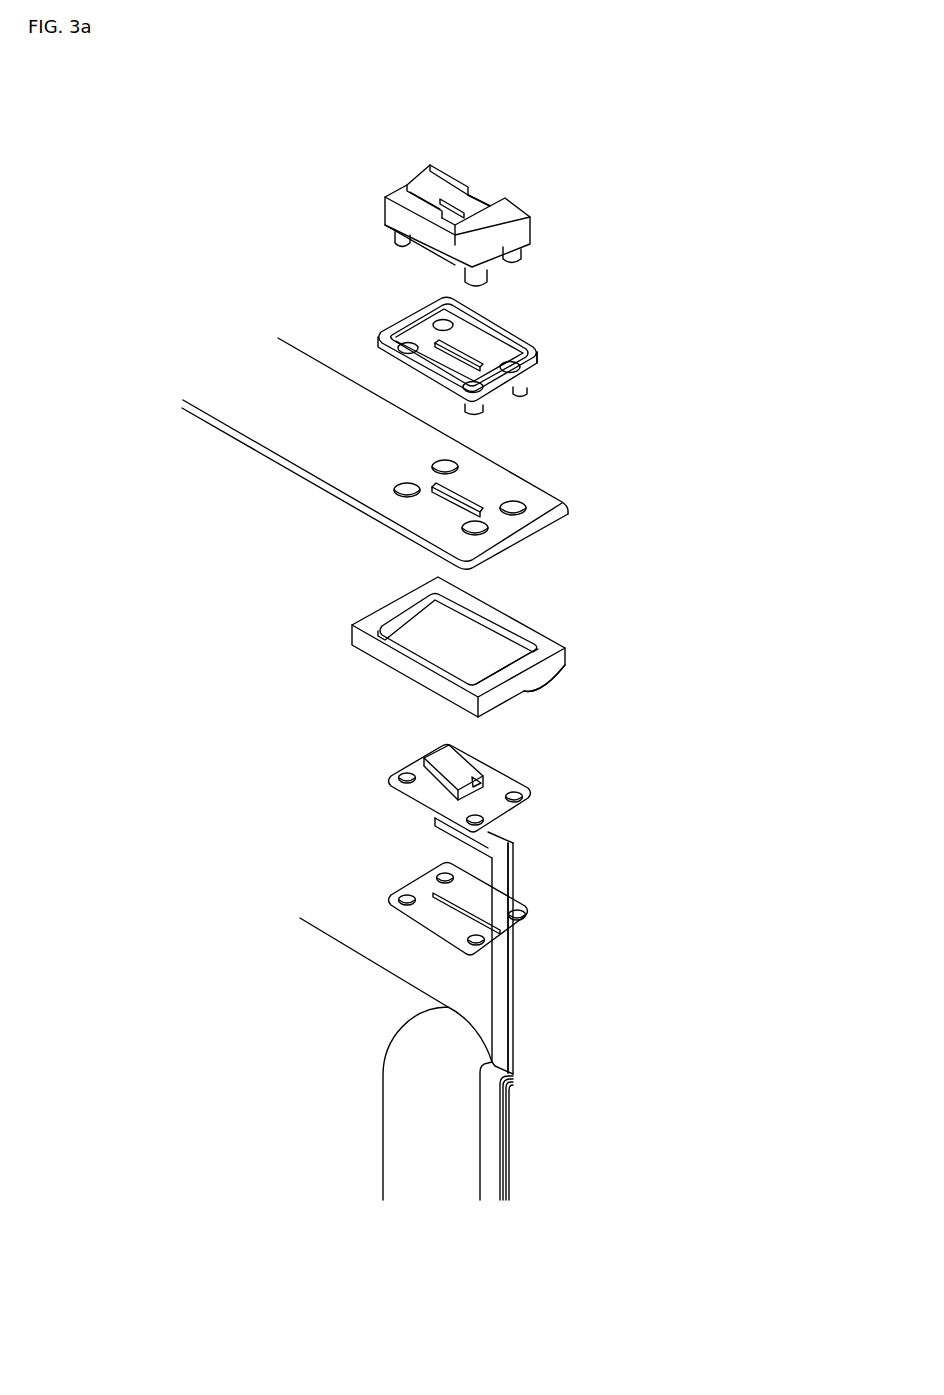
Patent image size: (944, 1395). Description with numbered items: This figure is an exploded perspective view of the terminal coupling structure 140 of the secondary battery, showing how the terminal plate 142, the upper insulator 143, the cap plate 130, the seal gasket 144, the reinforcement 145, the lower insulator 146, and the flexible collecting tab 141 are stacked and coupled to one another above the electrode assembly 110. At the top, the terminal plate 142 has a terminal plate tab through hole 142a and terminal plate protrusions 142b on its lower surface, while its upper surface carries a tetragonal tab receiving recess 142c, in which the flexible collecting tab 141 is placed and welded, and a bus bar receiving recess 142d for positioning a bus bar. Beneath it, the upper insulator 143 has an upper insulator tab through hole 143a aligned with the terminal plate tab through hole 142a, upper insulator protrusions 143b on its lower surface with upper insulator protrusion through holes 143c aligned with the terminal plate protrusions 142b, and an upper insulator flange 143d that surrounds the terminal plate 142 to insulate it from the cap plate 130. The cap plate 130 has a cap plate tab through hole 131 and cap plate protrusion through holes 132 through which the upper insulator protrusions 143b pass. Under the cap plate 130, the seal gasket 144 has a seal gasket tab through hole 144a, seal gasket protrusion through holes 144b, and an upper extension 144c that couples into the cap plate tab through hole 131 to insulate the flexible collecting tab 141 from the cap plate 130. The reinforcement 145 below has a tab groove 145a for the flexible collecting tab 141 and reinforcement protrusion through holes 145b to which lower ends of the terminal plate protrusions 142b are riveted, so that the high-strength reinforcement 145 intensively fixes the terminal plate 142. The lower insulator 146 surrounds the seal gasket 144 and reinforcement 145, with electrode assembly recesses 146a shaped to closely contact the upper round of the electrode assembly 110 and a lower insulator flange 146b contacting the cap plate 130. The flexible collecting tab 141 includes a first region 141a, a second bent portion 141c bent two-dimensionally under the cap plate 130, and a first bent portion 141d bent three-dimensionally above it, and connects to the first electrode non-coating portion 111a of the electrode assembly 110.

The electrode assembly 110 is at (285, 1067).
The first electrode non-coating portion 111a is at (490, 1118).
The cap plate 130 is at (263, 425).
The cap plate tab through hole 131 is at (465, 497).
The cap plate protrusion through holes 132 is at (405, 492).
The terminal coupling structure 140 is at (598, 248).
The flexible collecting tab 141 is at (517, 985).
The first region 141a is at (503, 1007).
The second bent portion 141c is at (463, 838).
The first bent portion 141d is at (440, 755).
The terminal plate 142 is at (513, 210).
The terminal plate tab through hole 142a is at (453, 208).
The terminal plate protrusions 142b is at (398, 243).
The tab receiving recess 142c is at (428, 215).
The bus bar receiving recess 142d is at (480, 198).
The upper insulator 143 is at (493, 352).
The upper insulator tab through hole 143a is at (458, 352).
The upper insulator protrusions 143b is at (523, 393).
The upper insulator protrusion through holes 143c is at (445, 320).
The upper insulator flange 143d is at (525, 370).
The seal gasket 144 is at (498, 808).
The seal gasket tab through hole 144a is at (478, 779).
The seal gasket protrusion through holes 144b is at (530, 794).
The upper extension 144c is at (433, 770).
The reinforcement 145 is at (418, 885).
The tab groove 145a is at (470, 912).
The reinforcement protrusion through holes 145b is at (395, 900).
The lower insulator 146 is at (557, 666).
The electrode assembly recesses 146a is at (528, 685).
The lower insulator flange 146b is at (545, 647).